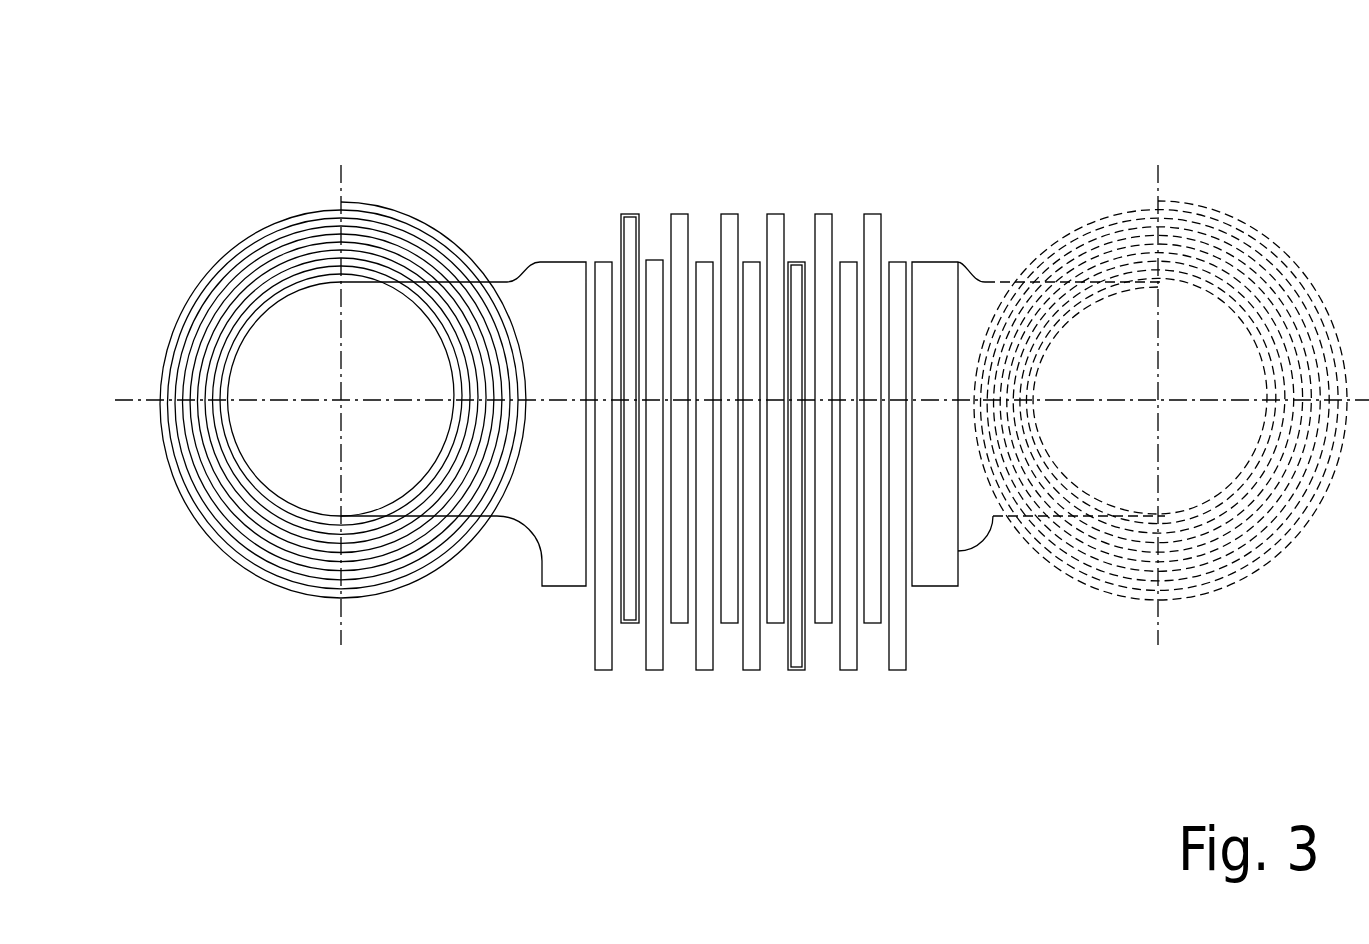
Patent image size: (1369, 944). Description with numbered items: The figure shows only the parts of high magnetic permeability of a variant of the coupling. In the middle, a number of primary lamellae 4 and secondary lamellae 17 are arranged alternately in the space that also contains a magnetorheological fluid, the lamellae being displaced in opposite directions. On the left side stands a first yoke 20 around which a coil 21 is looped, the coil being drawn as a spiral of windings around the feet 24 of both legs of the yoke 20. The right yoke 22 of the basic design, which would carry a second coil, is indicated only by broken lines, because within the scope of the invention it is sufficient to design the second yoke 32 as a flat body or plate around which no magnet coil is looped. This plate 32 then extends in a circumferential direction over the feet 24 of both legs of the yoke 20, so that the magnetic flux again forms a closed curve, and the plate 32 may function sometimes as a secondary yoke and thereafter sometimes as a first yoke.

The first yoke 20 is at (295, 339).
The coil 21 is at (208, 320).
The feet 24 is at (573, 367).
The primary lamellae 4 is at (603, 282).
The secondary lamellae 17 is at (680, 242).
The second yoke 32 is at (948, 295).
The right yoke 22 is at (1132, 228).